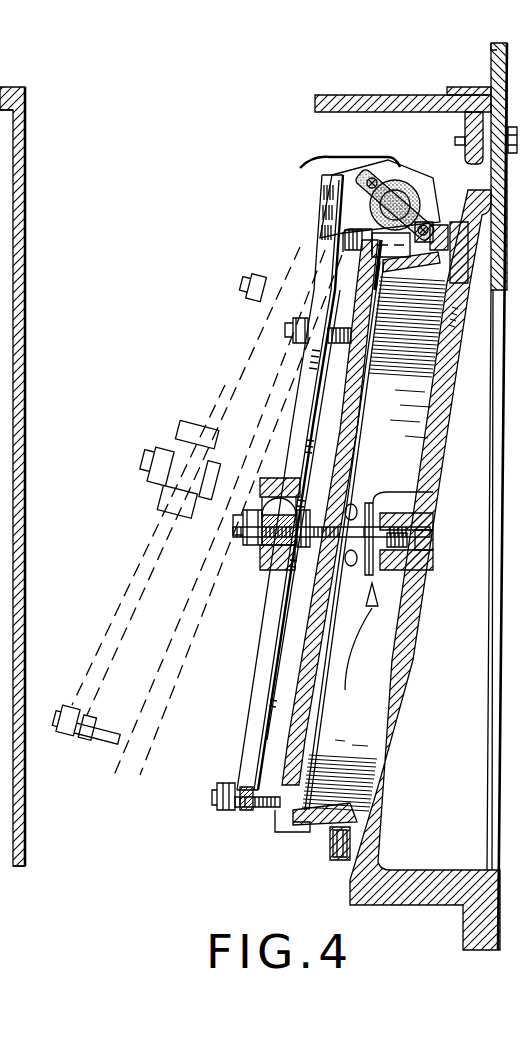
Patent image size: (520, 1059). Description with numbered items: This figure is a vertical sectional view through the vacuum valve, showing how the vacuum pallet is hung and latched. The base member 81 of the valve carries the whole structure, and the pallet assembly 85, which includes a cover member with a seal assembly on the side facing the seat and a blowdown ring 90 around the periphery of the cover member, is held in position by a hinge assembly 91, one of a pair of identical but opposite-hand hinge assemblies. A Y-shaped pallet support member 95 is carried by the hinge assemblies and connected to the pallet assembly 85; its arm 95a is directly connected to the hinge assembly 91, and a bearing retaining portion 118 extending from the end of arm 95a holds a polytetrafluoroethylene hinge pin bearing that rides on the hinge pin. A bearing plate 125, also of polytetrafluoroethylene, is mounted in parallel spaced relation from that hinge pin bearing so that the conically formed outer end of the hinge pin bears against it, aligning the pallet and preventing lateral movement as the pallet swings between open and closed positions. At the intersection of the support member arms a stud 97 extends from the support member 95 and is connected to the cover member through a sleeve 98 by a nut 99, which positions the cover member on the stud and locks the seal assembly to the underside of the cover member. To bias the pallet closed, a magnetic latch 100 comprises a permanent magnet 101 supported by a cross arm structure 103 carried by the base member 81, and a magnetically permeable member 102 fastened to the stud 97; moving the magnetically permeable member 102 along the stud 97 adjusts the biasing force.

The base member 81 is at (0, 800).
The pallet assembly 85 is at (292, 745).
The blowdown ring 90 is at (297, 830).
The hinge assembly 91 is at (395, 152).
The Y-shaped pallet support member 95 is at (293, 431).
The arm 95a is at (323, 302).
The stud 97 is at (240, 528).
The sleeve 98 is at (300, 548).
The nut 99 is at (355, 505).
The magnetic latch 100 is at (353, 650).
The permanent magnet 101 is at (413, 570).
The magnetically permeable member 102 is at (376, 503).
The cross arm structure 103 is at (397, 660).
The bearing retaining portion 118 is at (343, 160).
The bearing plate 125 is at (345, 209).